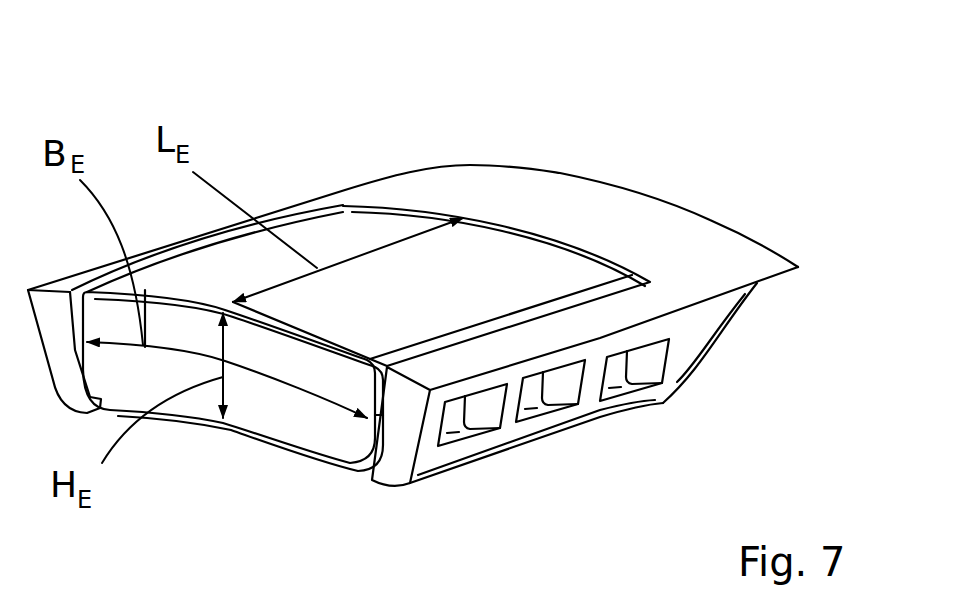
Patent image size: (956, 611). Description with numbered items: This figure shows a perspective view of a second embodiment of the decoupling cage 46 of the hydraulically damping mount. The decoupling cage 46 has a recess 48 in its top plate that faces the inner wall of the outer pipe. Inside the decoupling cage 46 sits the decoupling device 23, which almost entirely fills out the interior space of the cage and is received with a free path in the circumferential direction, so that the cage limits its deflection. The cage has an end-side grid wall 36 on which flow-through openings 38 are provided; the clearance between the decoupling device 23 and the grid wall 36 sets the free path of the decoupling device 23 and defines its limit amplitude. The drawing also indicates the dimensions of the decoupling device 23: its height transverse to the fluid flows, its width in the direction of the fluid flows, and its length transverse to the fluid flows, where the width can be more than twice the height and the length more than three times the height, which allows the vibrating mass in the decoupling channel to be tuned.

The decoupling device 23 is at (295, 432).
The grid wall 36 is at (683, 327).
The flow-through openings 38 is at (533, 408).
The decoupling cage 46 is at (579, 203).
The recess 48 is at (337, 243).